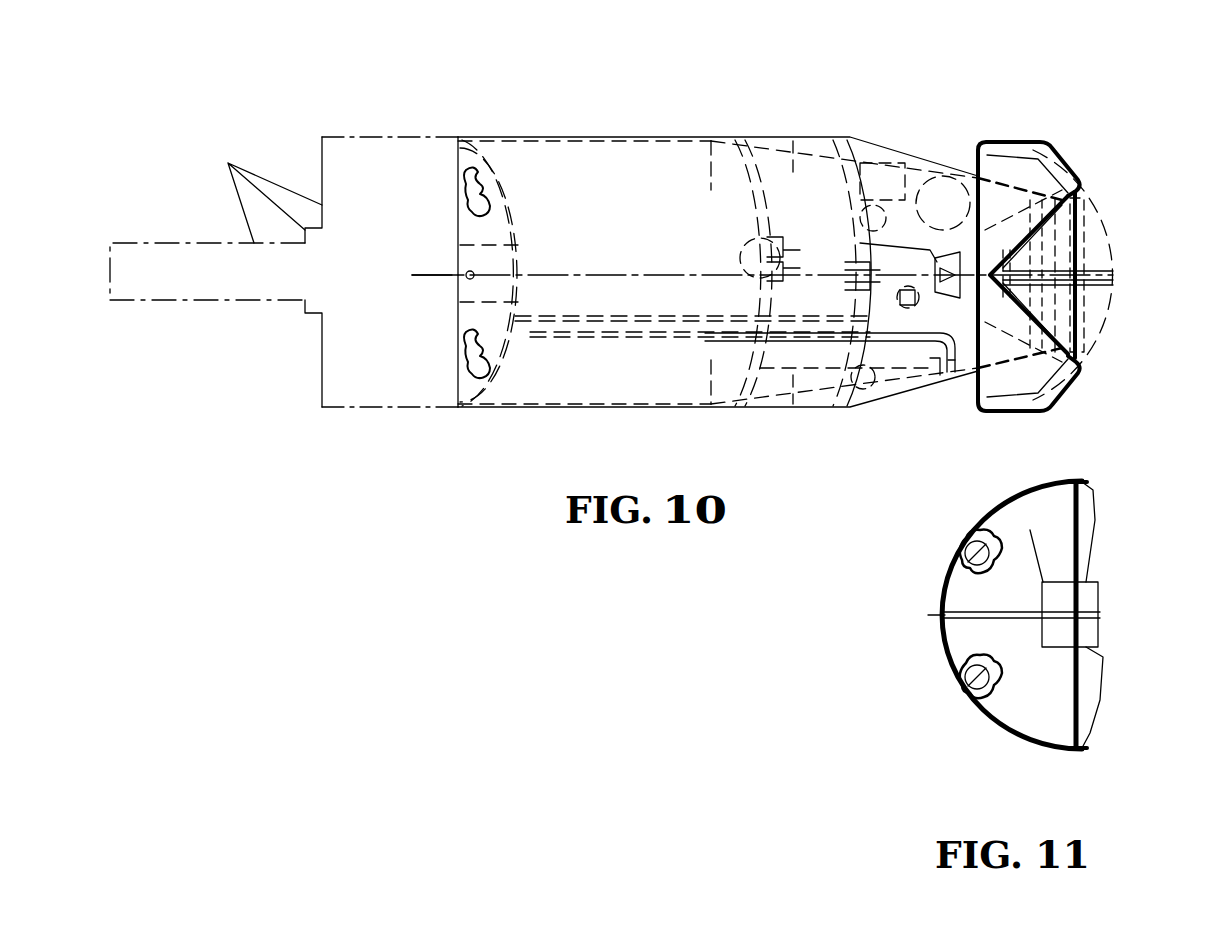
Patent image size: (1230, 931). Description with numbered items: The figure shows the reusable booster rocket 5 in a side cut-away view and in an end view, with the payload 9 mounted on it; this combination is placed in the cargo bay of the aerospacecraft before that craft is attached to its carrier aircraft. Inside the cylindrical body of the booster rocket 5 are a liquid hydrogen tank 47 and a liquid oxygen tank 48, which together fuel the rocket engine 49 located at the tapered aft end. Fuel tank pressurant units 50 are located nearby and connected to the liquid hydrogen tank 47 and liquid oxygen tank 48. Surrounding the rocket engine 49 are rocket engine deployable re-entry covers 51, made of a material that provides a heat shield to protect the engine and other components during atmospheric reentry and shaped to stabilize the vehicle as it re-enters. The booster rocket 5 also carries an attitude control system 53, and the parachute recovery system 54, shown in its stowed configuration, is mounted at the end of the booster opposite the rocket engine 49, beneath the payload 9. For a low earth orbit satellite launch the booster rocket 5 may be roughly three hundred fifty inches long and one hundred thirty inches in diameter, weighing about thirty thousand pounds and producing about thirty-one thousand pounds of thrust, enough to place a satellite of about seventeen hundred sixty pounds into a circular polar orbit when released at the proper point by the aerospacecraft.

In FIG. 10, the booster rocket 5 is at (732, 410).
In FIG. 10, the payload 9 is at (263, 190).
In FIG. 10, the liquid hydrogen tank 47 is at (592, 202).
In FIG. 10, the liquid oxygen tank 48 is at (788, 188).
In FIG. 10, the rocket engine 49 is at (1097, 335).
In FIG. 10, the fuel tank pressurant units 50 is at (945, 185).
In FIG. 10, the rocket engine deployable re-entry covers 51 is at (1058, 152).
In FIG. 10, the attitude control system 53 is at (458, 395).
In FIG. 11, the attitude control system 53 is at (983, 707).
In FIG. 10, the parachute recovery system 54 is at (456, 290).
In FIG. 11, the parachute recovery system 54 is at (1030, 530).